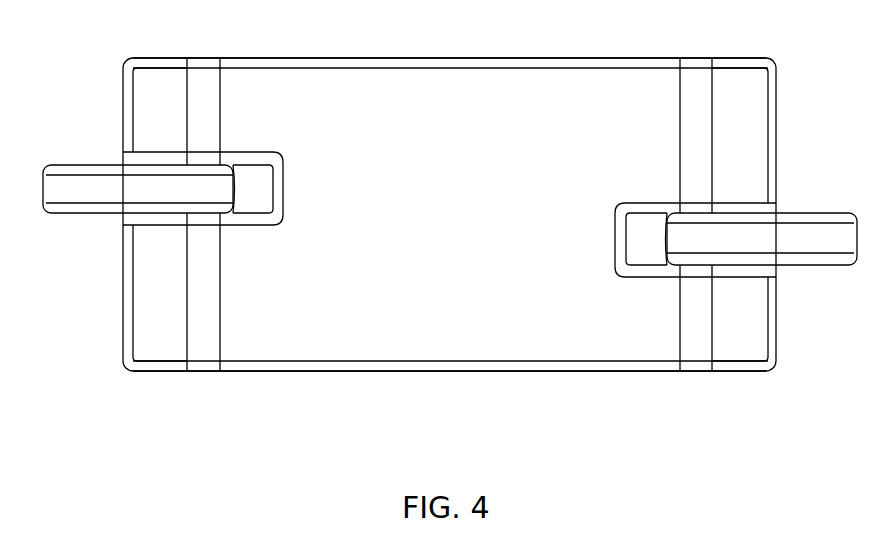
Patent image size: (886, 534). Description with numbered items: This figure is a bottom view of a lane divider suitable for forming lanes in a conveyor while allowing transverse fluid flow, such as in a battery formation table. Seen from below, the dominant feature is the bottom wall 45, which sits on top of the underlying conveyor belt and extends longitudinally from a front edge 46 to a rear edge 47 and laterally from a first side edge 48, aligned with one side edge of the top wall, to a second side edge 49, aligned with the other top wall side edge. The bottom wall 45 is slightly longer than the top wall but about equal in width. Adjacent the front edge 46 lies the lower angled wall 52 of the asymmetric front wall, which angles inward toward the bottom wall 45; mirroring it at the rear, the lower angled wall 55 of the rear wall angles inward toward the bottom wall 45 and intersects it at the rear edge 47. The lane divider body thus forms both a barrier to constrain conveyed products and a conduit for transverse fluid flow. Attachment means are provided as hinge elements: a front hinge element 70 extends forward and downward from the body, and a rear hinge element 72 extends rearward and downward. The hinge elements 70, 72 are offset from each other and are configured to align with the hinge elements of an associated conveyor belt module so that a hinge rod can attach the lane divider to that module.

The bottom wall 45 is at (420, 192).
The front edge 46 is at (690, 58).
The rear edge 47 is at (203, 64).
The first side edge 48 is at (602, 363).
The second side edge 49 is at (631, 58).
The lower angled wall 52 is at (752, 107).
The lower angled wall 55 is at (170, 105).
The front hinge element 70 is at (62, 190).
The rear hinge element 72 is at (810, 240).